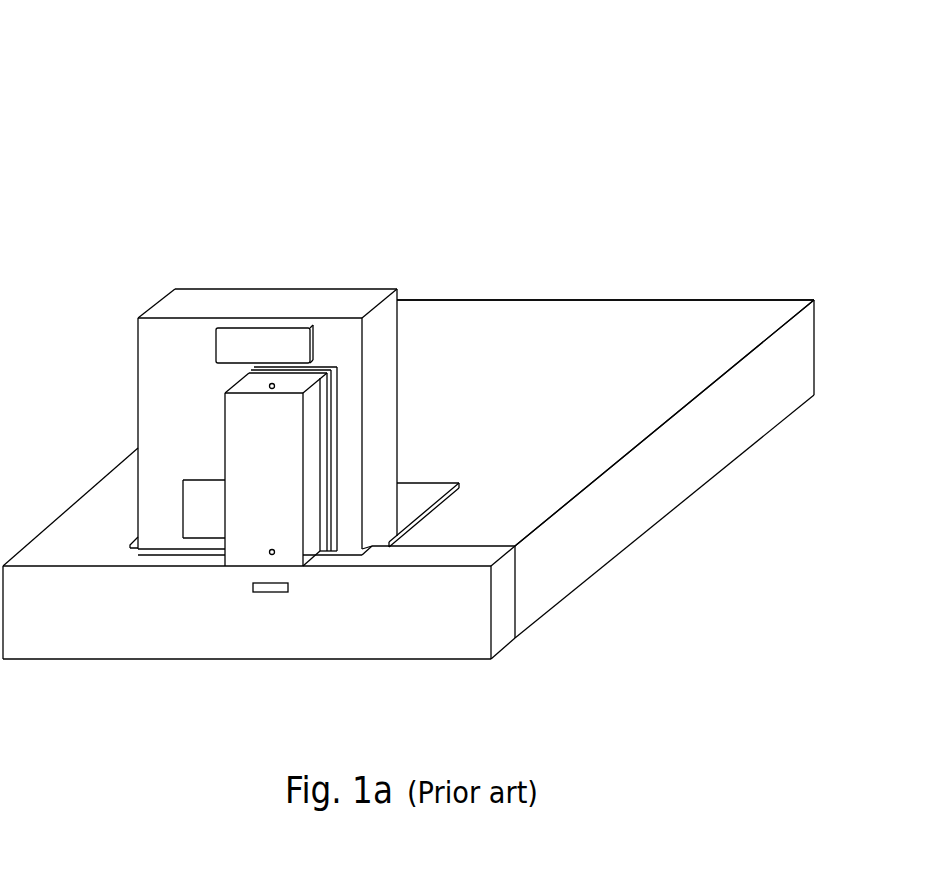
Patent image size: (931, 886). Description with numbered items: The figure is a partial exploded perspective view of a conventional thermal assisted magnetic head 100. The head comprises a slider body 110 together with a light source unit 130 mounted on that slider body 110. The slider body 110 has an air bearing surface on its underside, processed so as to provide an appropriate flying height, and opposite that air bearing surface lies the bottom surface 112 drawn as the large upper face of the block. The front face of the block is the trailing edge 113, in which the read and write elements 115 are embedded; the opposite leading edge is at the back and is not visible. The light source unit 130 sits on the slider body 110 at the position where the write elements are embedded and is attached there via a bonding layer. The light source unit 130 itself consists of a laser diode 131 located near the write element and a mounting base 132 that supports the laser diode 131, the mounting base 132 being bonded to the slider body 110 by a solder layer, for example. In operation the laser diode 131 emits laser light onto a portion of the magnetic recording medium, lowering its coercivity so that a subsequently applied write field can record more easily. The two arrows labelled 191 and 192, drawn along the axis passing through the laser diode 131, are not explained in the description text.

The thermal assisted magnetic head 100 is at (130, 44).
The slider body 110 is at (655, 290).
The bottom surface 112 is at (457, 327).
The trailing edge 113 is at (117, 605).
The read and write elements 115 is at (262, 590).
The light source unit 130 is at (241, 407).
The laser diode 131 is at (234, 425).
The mounting base 132 is at (177, 302).
The downward movement direction 191 is at (272, 554).
The upward movement direction 192 is at (272, 384).